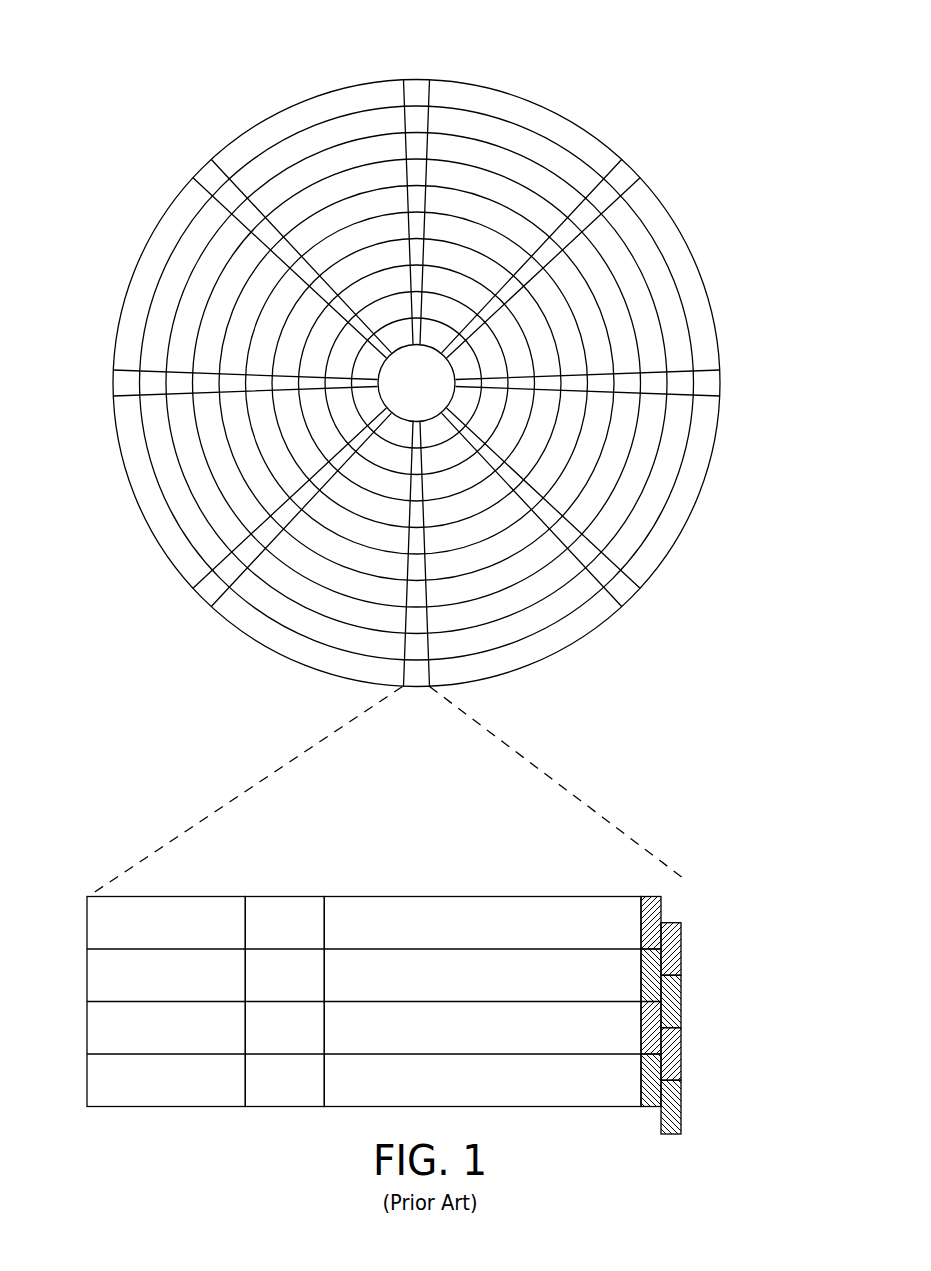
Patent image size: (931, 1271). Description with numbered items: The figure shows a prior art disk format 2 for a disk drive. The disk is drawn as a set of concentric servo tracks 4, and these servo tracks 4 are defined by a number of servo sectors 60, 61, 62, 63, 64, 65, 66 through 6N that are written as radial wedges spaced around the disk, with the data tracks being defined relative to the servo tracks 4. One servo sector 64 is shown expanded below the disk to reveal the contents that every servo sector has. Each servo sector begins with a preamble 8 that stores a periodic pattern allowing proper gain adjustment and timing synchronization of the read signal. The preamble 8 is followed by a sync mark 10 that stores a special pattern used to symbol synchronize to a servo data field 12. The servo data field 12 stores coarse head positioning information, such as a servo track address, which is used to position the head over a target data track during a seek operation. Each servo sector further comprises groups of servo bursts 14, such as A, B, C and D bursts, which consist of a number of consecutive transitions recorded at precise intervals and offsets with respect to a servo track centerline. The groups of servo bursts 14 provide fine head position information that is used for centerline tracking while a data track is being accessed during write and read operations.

The disk format 2 is at (190, 80).
The servo tracks 4 is at (520, 138).
The servo sector 60 is at (417, 88).
The servo sector 61 is at (623, 177).
The servo sector 62 is at (712, 383).
The servo sector 63 is at (626, 597).
The servo sector 64 is at (280, 752).
The servo sector 65 is at (207, 591).
The servo sector 66 is at (120, 380).
The servo sector 6N is at (208, 170).
The preamble 8 is at (173, 896).
The sync mark 10 is at (287, 896).
The servo data field 12 is at (471, 896).
The servo bursts 14 is at (682, 890).